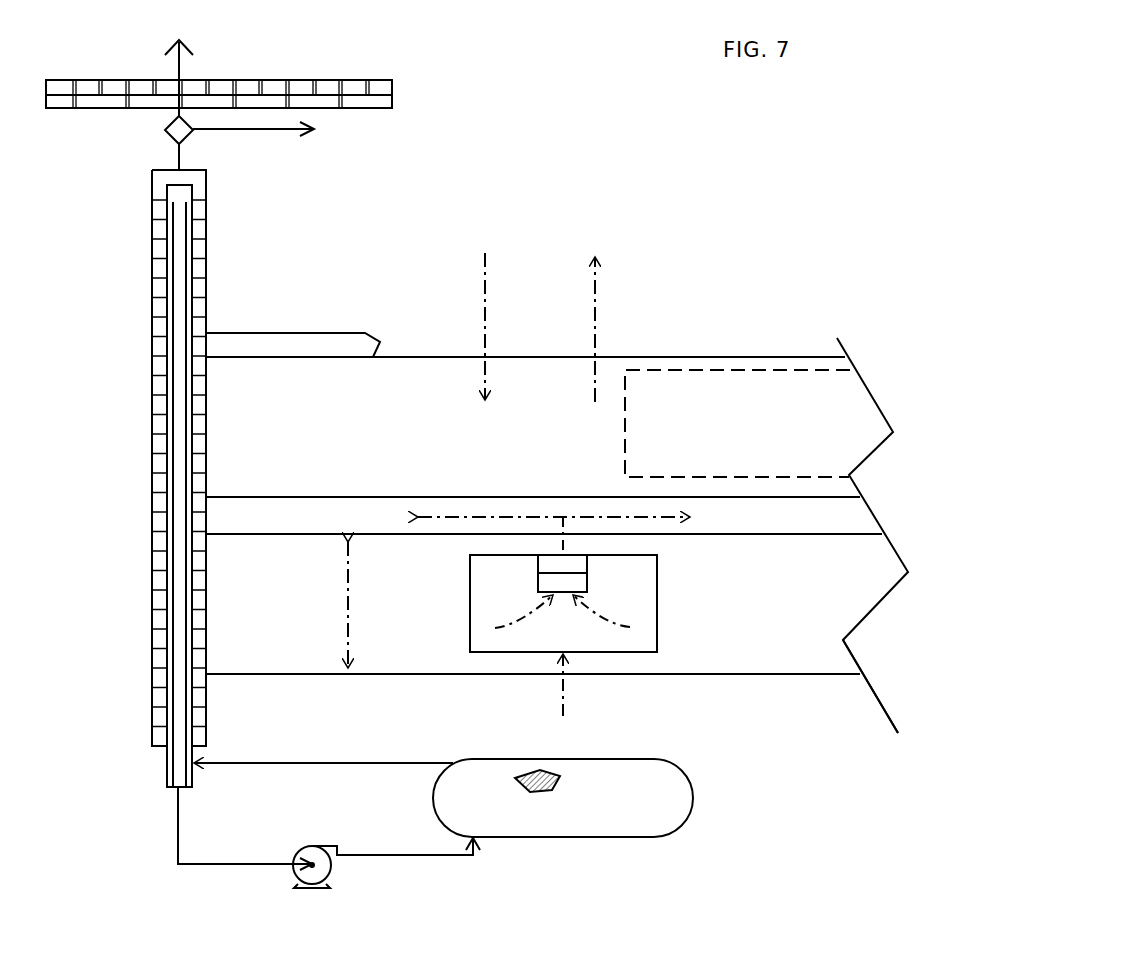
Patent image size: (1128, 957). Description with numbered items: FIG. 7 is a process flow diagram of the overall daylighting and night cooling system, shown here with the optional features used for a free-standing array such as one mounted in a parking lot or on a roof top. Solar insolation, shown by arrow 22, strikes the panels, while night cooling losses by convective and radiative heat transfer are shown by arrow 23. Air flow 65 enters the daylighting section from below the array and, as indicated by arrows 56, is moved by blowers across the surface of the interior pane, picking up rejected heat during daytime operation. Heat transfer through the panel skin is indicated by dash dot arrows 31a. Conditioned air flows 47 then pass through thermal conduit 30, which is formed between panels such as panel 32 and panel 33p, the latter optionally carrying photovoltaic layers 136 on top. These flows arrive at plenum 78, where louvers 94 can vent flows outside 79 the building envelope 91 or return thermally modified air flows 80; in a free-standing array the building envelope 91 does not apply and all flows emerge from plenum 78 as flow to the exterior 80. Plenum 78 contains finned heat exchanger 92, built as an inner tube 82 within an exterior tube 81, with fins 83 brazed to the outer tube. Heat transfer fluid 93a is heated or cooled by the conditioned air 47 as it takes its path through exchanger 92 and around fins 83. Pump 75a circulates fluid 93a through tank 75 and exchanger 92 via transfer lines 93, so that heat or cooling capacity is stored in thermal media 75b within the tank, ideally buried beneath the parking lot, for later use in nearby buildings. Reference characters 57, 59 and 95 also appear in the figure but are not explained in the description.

The thermally modified air flow 80 is at (179, 66).
The building envelope 91 is at (392, 92).
The louvers 94 is at (162, 143).
The vented air flow 79 is at (270, 130).
The heat transfer fluid 93a is at (182, 215).
The plenum 78 is at (210, 213).
The inner heat exchanger wall 95 is at (188, 432).
The fins 83 is at (160, 667).
The finned heat exchanger 92 is at (168, 265).
The conduit assembly 30 is at (843, 520).
The panel 33p is at (405, 385).
The photovoltaic layers 136 is at (857, 410).
The panel 32 is at (855, 606).
The solar insolation 22 is at (485, 312).
The night cooling losses 23 is at (595, 313).
The air flows 47 is at (552, 530).
The heat transfer 31a is at (325, 605).
The air flow 56 is at (563, 603).
The heater housing 59 is at (555, 563).
The heating element 57 is at (575, 582).
The air flow from below array 65 is at (563, 697).
The tank 75 is at (625, 828).
The thermal media 75b is at (530, 775).
The pump 75a is at (386, 864).
The transfer lines 93 is at (247, 822).
The exterior tube 81 is at (160, 766).
The inner tube 82 is at (172, 786).